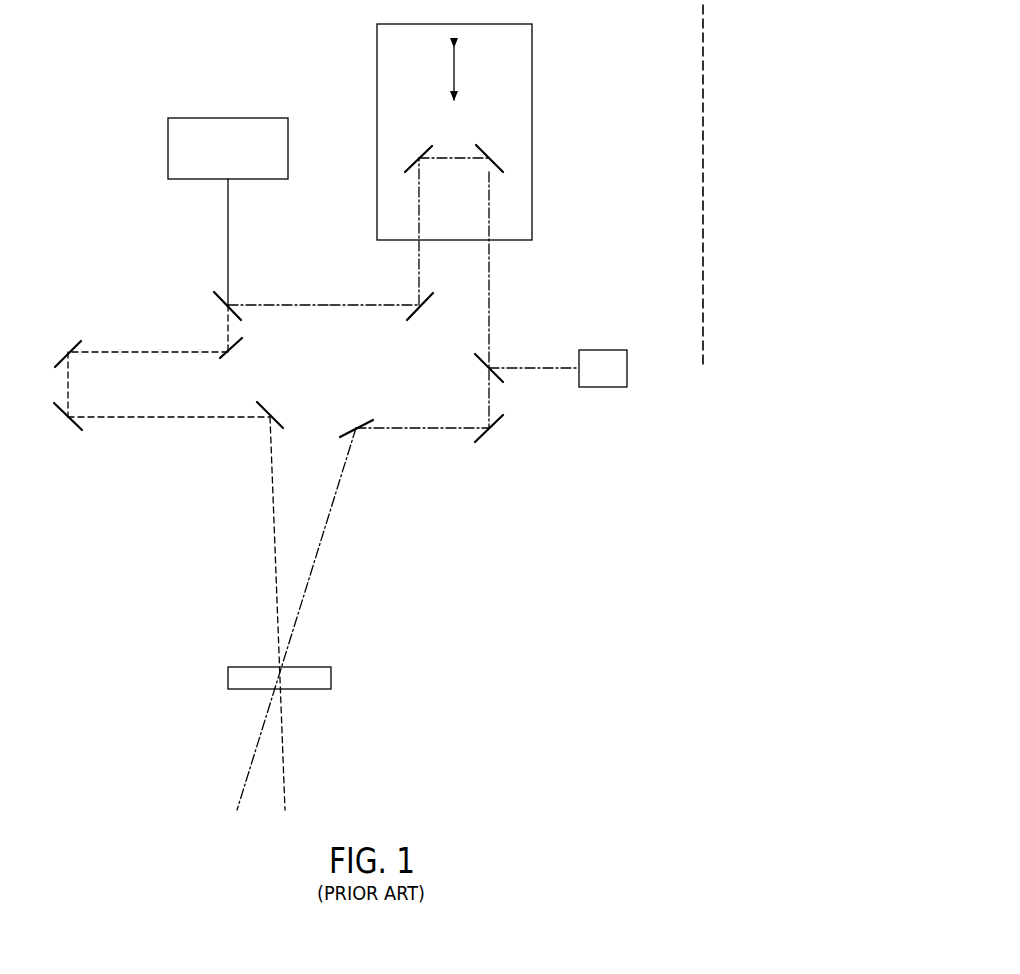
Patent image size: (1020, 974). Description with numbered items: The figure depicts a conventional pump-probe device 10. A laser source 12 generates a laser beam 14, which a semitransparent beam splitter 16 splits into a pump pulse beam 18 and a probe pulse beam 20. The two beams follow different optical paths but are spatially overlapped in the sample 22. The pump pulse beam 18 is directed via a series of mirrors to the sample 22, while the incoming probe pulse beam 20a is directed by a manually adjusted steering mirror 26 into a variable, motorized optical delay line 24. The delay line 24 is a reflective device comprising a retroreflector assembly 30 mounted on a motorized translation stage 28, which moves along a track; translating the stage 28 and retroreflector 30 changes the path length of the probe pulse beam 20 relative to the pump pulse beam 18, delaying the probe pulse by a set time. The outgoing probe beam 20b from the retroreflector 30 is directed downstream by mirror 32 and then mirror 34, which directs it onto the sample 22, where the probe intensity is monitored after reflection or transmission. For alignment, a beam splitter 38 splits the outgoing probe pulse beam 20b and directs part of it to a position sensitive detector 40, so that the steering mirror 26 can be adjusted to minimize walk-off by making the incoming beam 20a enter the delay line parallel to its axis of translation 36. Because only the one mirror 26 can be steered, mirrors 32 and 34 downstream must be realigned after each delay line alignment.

The pump-probe device 10 is at (150, 93).
The laser source 12 is at (168, 148).
The laser beam 14 is at (228, 243).
The semitransparent beam splitter 16 is at (213, 298).
The pump pulse beam 18 is at (277, 612).
The probe pulse beam 20 is at (326, 305).
The incoming probe pulse beam 20a is at (290, 308).
The outgoing probe pulse beam 20b is at (491, 294).
The sample 22 is at (228, 680).
The variable optical delay line 24 is at (499, 132).
The steering mirror 26 is at (413, 315).
The motorized translation stage 28 is at (532, 133).
The retroreflector assembly 30 is at (425, 152).
The mirror 32 is at (484, 435).
The mirror 34 is at (368, 424).
The axis of translation 36 is at (703, 185).
The beam splitter (mirror) 38 is at (476, 362).
The position sensitive detector 40 is at (627, 370).